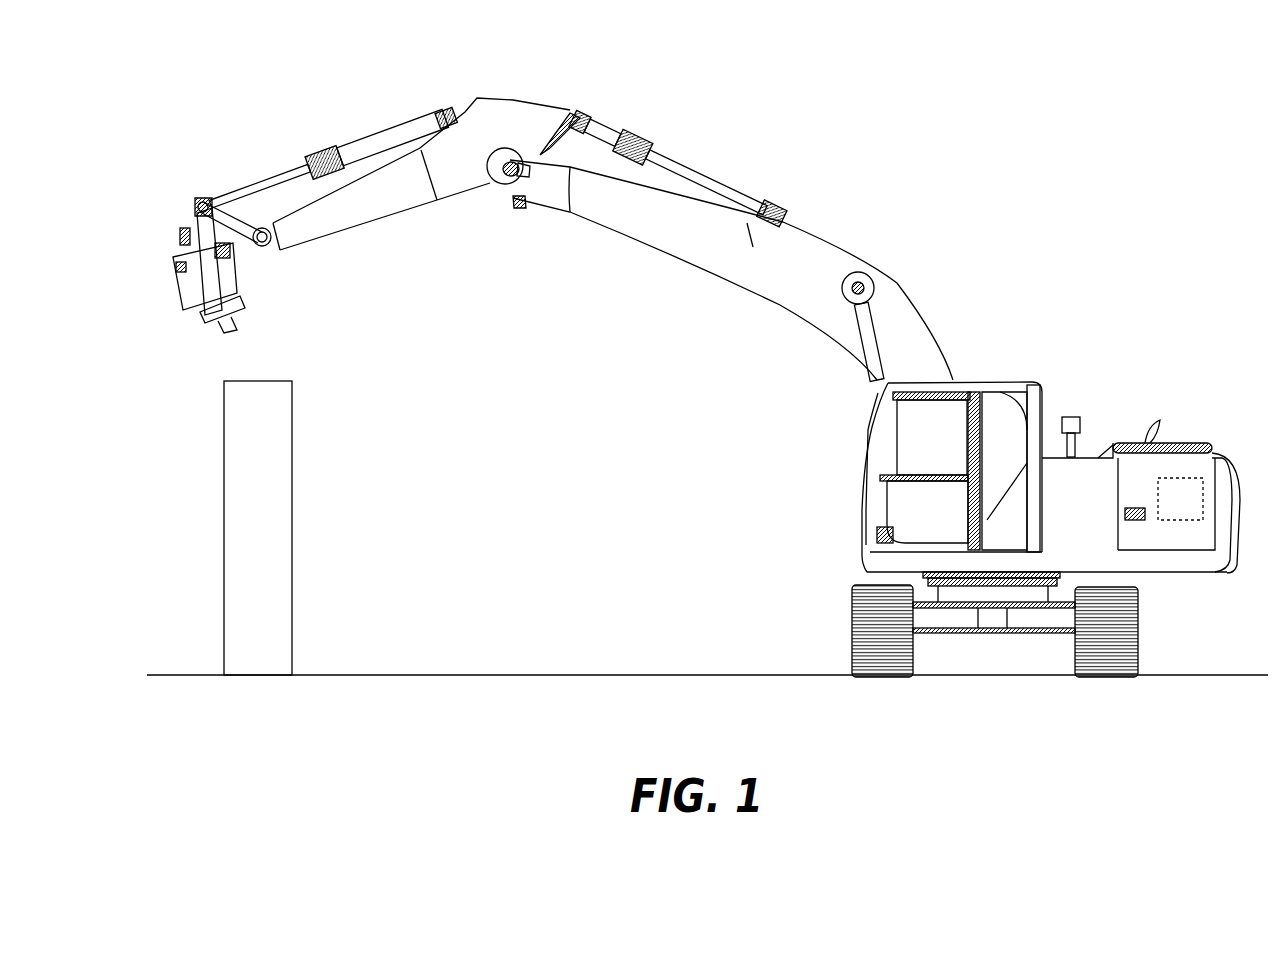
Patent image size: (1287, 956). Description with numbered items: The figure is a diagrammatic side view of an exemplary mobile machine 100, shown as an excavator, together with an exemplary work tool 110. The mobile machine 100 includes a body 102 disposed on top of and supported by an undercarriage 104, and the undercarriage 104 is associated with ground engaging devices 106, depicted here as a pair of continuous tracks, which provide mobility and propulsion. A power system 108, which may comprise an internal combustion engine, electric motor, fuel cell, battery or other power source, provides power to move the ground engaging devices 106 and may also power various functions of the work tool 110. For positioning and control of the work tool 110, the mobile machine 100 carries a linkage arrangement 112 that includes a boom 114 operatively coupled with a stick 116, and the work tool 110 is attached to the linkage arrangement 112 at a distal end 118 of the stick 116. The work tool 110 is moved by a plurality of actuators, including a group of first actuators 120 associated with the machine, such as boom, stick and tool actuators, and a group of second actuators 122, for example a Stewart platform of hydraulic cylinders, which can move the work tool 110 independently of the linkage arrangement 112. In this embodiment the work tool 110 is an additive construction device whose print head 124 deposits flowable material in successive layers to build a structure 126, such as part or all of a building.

The mobile machine 100 is at (1165, 272).
The body 102 is at (1051, 457).
The undercarriage 104 is at (983, 633).
The ground engaging devices 106 is at (852, 592).
The power system 108 is at (1181, 501).
The work tool 110 is at (233, 264).
The linkage arrangement 112 is at (517, 203).
The boom 114 is at (702, 265).
The stick 116 is at (378, 220).
The distal end 118 is at (202, 202).
The first actuators 120 is at (385, 135).
The second actuators 122 is at (188, 243).
The print head 124 is at (228, 333).
The structure 126 is at (262, 483).